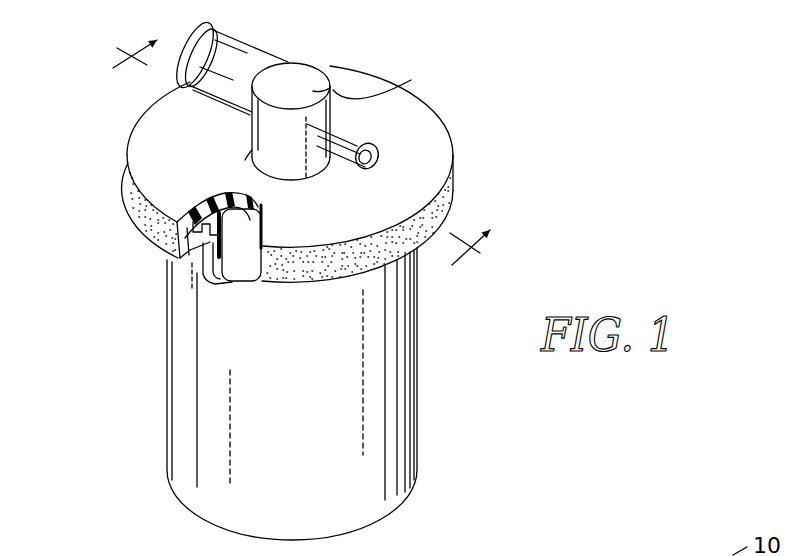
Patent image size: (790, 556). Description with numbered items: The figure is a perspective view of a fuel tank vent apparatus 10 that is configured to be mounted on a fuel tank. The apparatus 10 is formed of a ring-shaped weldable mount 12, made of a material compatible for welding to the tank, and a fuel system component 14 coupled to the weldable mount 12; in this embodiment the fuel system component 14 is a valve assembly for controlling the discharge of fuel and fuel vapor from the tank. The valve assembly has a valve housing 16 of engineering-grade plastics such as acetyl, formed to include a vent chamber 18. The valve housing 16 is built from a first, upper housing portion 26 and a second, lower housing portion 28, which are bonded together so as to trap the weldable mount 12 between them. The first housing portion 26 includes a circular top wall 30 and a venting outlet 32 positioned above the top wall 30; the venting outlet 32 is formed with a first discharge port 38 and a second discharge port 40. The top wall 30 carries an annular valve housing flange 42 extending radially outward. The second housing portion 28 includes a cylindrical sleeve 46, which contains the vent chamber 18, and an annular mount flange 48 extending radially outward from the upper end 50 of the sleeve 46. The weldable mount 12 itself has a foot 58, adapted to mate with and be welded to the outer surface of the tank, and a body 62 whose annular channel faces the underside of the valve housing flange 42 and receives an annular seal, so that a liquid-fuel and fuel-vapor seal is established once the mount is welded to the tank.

The apparatus 10 is at (540, 128).
The weldable mount 12 is at (455, 203).
The fuel system component 14 is at (457, 122).
The valve housing 16 is at (437, 108).
The vent chamber 18 is at (248, 257).
The first housing portion 26 is at (330, 66).
The second housing portion 28 is at (422, 452).
The circular top wall 30 is at (422, 175).
The venting outlet 32 is at (388, 122).
The first discharge port 38 is at (190, 37).
The second discharge port 40 is at (375, 156).
The annular valve housing flange 42 is at (152, 205).
The cylindrical sleeve 46 is at (212, 410).
The annular mount flange 48 is at (203, 262).
The upper end 50 is at (223, 218).
The foot 58 is at (183, 250).
The body 62 is at (200, 212).